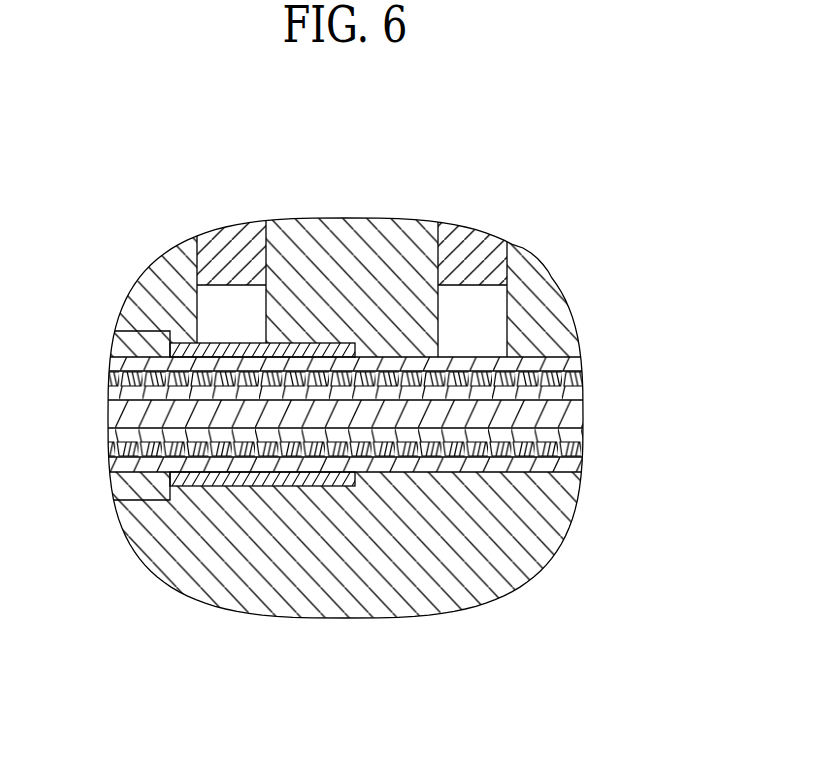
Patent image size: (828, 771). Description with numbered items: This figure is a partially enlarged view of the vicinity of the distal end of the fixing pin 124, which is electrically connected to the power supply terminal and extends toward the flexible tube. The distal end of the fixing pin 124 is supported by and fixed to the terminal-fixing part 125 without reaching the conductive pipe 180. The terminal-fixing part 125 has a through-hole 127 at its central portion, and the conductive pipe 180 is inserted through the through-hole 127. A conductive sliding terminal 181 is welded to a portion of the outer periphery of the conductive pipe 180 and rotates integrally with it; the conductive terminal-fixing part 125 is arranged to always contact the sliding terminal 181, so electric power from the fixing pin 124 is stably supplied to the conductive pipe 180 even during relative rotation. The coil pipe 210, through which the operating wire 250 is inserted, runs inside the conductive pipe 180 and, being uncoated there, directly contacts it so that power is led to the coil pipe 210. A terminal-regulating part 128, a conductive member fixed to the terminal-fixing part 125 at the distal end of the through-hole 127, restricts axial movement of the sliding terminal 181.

The fixing pin 124 is at (235, 247).
The terminal-fixing part 125 is at (366, 258).
The through-hole 127 is at (535, 357).
The terminal-regulating part 128 is at (127, 337).
The conductive pipe 180 is at (585, 357).
The sliding terminal 181 is at (193, 350).
The coil pipe 210 is at (583, 372).
The operating wire 250 is at (583, 420).